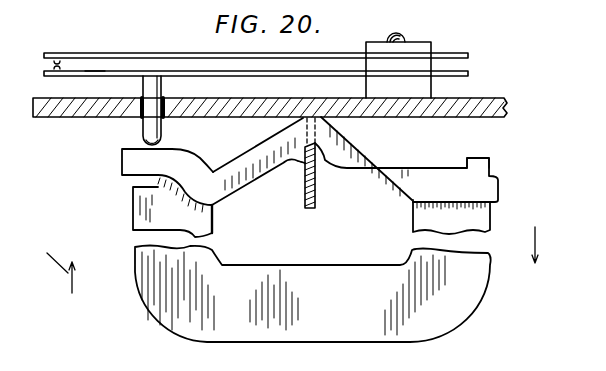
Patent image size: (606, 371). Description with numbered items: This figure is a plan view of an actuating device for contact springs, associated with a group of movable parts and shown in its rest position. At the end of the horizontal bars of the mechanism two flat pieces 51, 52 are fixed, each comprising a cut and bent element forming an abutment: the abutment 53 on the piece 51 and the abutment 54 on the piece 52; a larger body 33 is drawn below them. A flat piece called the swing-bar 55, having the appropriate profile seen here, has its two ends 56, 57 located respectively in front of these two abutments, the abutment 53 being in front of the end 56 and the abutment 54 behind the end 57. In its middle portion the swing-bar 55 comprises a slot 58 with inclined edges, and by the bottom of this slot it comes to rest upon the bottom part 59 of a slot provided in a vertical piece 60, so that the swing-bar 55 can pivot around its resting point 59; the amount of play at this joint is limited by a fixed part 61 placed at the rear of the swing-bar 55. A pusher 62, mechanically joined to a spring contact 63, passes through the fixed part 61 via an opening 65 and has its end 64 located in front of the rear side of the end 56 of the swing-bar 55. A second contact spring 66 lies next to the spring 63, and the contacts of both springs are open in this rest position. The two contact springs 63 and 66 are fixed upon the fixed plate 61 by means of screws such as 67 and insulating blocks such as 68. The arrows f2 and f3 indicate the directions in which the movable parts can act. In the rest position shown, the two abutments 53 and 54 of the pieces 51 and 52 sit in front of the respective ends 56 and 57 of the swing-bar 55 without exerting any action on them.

The body 33 is at (460, 302).
The flat piece 51 is at (210, 218).
The flat piece 52 is at (421, 217).
The abutment 53 is at (134, 197).
The abutment 54 is at (479, 157).
The swing-bar 55 is at (375, 162).
The end of swing-bar 56 is at (128, 163).
The end of swing-bar 57 is at (487, 191).
The slot 58 is at (302, 167).
The bottom part of slot 59 is at (317, 143).
The vertical piece 60 is at (318, 199).
The fixed part 61 is at (478, 107).
The pusher 62 is at (158, 131).
The spring contact 63 is at (94, 75).
The end of pusher 64 is at (145, 144).
The opening 65 is at (142, 97).
The contact spring 66 is at (136, 53).
The screw 67 is at (406, 33).
The insulating block 68 is at (428, 90).
The force arrow f2 is at (60, 265).
The force arrow f3 is at (543, 243).